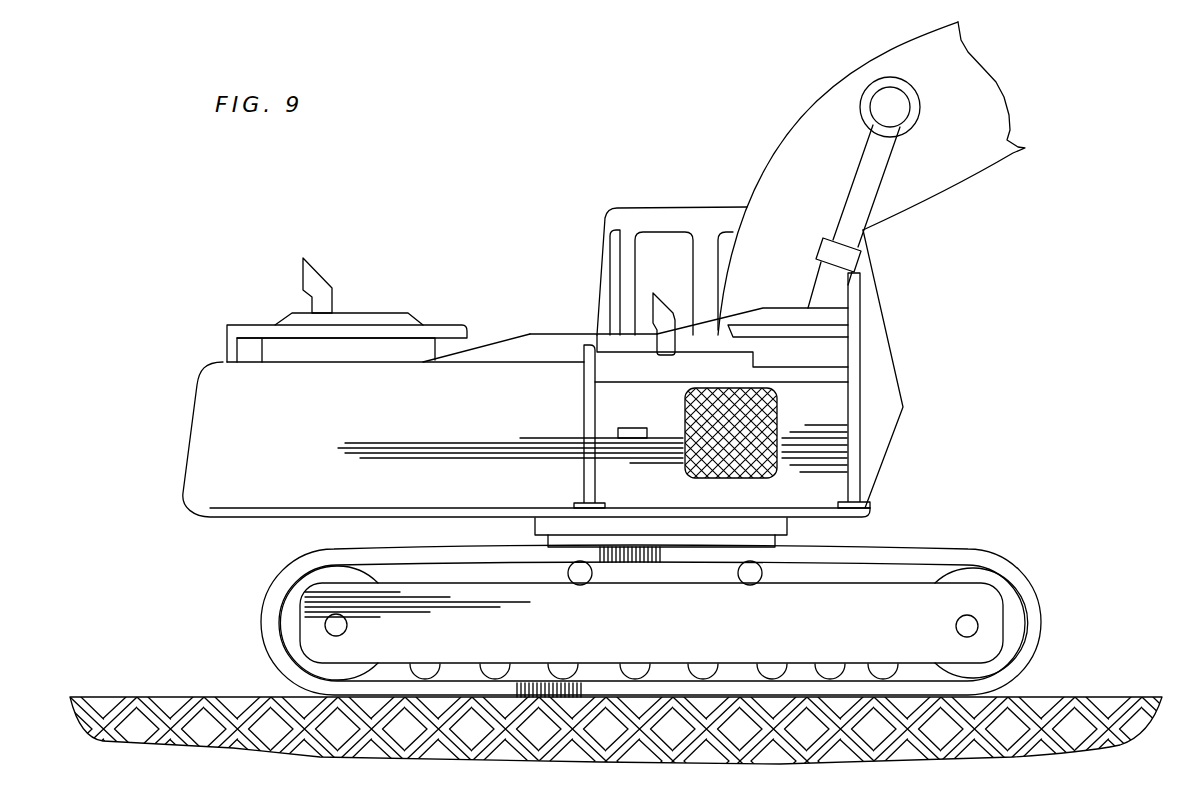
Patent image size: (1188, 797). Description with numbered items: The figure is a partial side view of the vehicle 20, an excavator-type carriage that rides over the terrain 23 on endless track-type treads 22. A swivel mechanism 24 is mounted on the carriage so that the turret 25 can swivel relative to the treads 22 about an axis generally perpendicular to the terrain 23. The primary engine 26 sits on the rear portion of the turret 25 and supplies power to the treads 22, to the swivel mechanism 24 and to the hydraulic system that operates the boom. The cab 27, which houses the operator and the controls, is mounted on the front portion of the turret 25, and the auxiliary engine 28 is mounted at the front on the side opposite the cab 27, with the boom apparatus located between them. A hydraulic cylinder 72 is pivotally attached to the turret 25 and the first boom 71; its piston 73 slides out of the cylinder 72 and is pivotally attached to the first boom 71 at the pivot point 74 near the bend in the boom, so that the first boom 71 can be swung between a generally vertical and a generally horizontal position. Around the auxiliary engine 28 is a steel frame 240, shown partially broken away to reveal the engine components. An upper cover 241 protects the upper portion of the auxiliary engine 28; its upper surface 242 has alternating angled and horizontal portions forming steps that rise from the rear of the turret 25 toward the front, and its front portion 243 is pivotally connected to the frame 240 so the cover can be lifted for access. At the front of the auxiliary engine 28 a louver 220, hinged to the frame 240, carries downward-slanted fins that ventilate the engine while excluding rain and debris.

The vehicle 20 is at (481, 362).
The treads 22 is at (1002, 572).
The terrain 23 is at (215, 697).
The swivel mechanism 24 is at (553, 527).
The turret 25 is at (255, 248).
The primary engine 26 is at (370, 313).
The cab 27 is at (673, 205).
The auxiliary engine 28 is at (830, 447).
The first boom 71 is at (827, 138).
The hydraulic cylinder 72 is at (837, 287).
The piston 73 is at (867, 183).
The pivot point 74 is at (882, 92).
The louver 220 is at (862, 355).
The steel frame 240 is at (258, 333).
The upper cover 241 is at (557, 350).
The upper surface 242 is at (501, 342).
The front portion 243 is at (780, 307).